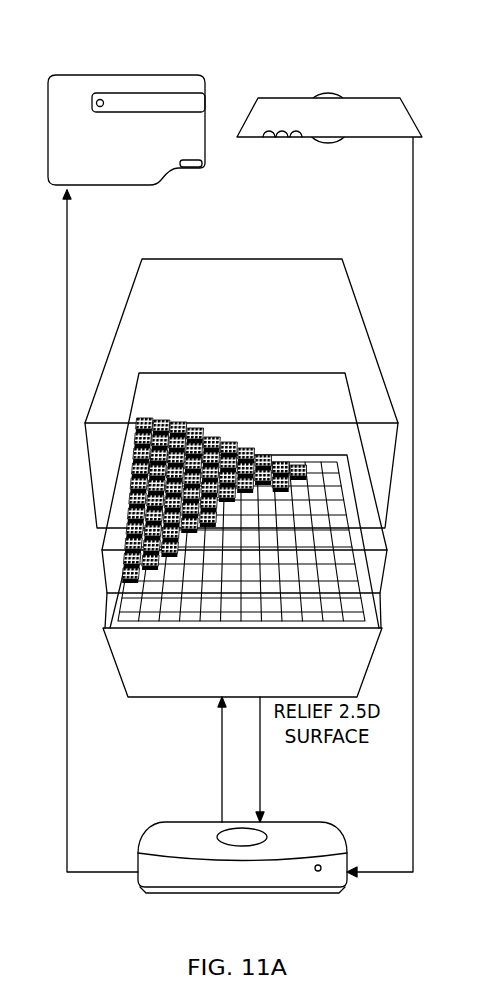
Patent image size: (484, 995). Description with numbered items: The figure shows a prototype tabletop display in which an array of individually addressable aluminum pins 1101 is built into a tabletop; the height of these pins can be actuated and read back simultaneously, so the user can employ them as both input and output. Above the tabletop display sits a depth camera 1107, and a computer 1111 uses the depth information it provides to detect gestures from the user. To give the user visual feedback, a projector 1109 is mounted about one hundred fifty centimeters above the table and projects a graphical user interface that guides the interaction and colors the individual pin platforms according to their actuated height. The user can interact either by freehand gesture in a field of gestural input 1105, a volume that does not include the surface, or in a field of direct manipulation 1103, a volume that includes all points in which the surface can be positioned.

The array of individually addressable aluminum pins 1101 is at (126, 512).
The field of direct manipulation 1103 is at (222, 373).
The field of gestural input 1105 is at (278, 259).
The depth camera 1107 is at (375, 98).
The projector 1109 is at (107, 75).
The computer 1111 is at (172, 822).